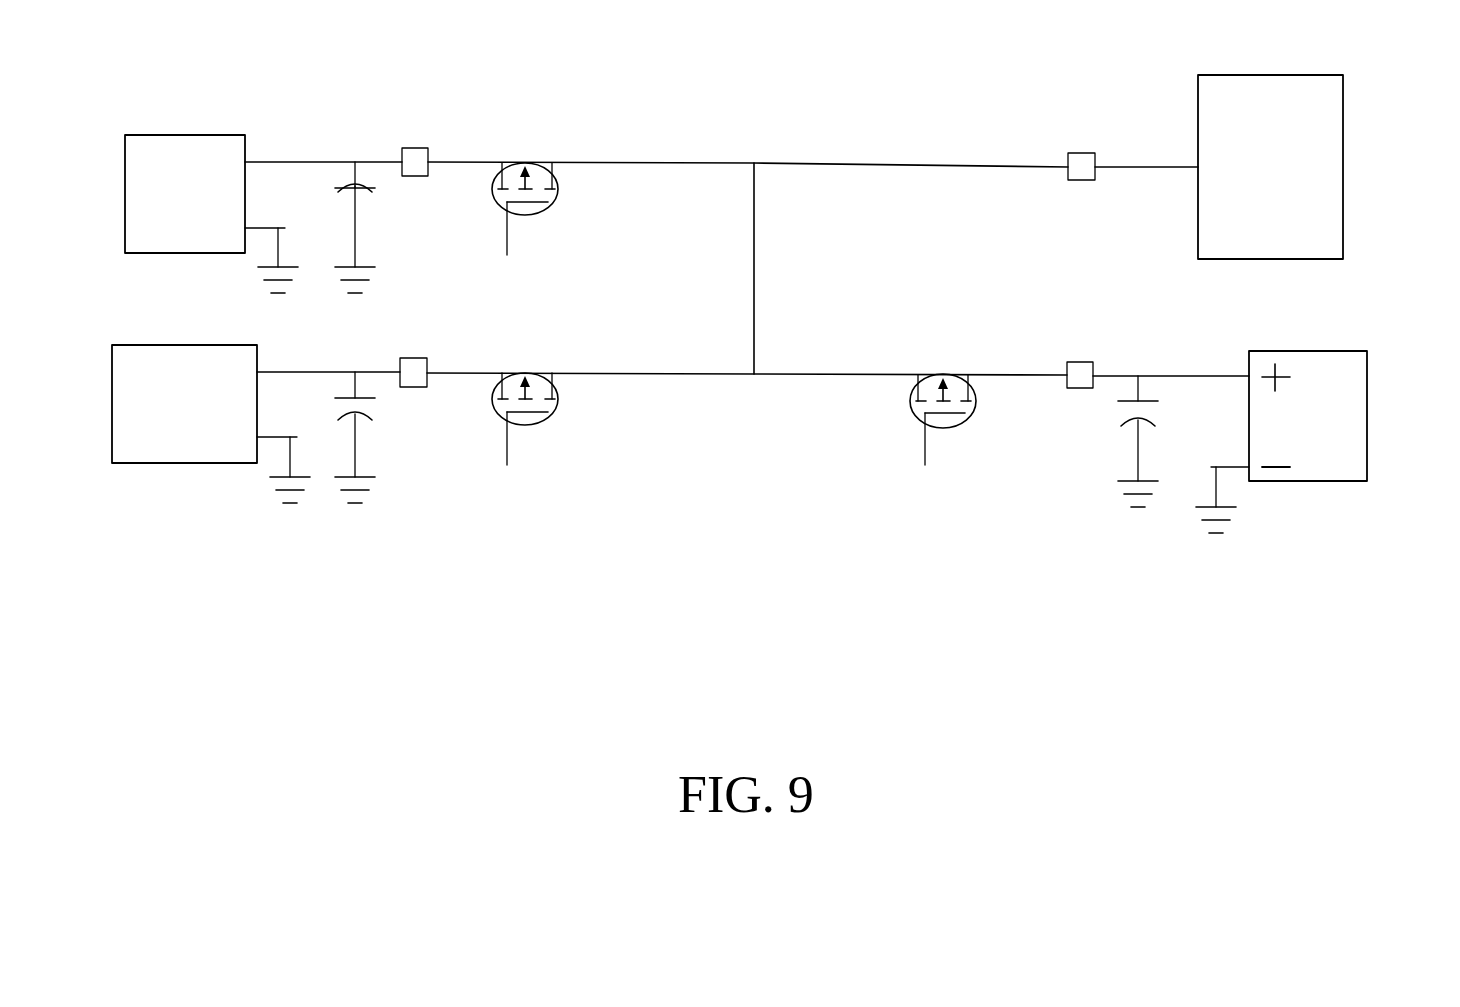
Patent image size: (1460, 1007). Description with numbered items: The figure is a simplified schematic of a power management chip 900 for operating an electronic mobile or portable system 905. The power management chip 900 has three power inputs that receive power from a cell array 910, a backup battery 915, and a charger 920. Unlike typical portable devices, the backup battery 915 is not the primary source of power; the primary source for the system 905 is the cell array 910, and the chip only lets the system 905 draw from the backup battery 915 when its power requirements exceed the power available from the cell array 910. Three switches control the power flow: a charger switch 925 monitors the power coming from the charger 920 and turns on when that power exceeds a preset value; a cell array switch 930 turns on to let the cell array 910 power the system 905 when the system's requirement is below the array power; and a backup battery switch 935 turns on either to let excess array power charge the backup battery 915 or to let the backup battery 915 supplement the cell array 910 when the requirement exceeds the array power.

The power management chip 900 is at (775, 313).
The portable system 905 is at (1330, 112).
The cell array 910 is at (190, 465).
The backup battery 915 is at (1352, 377).
The charger 920 is at (170, 143).
The charger switch 925 is at (552, 163).
The cell array switch 930 is at (555, 402).
The backup battery switch 935 is at (952, 380).